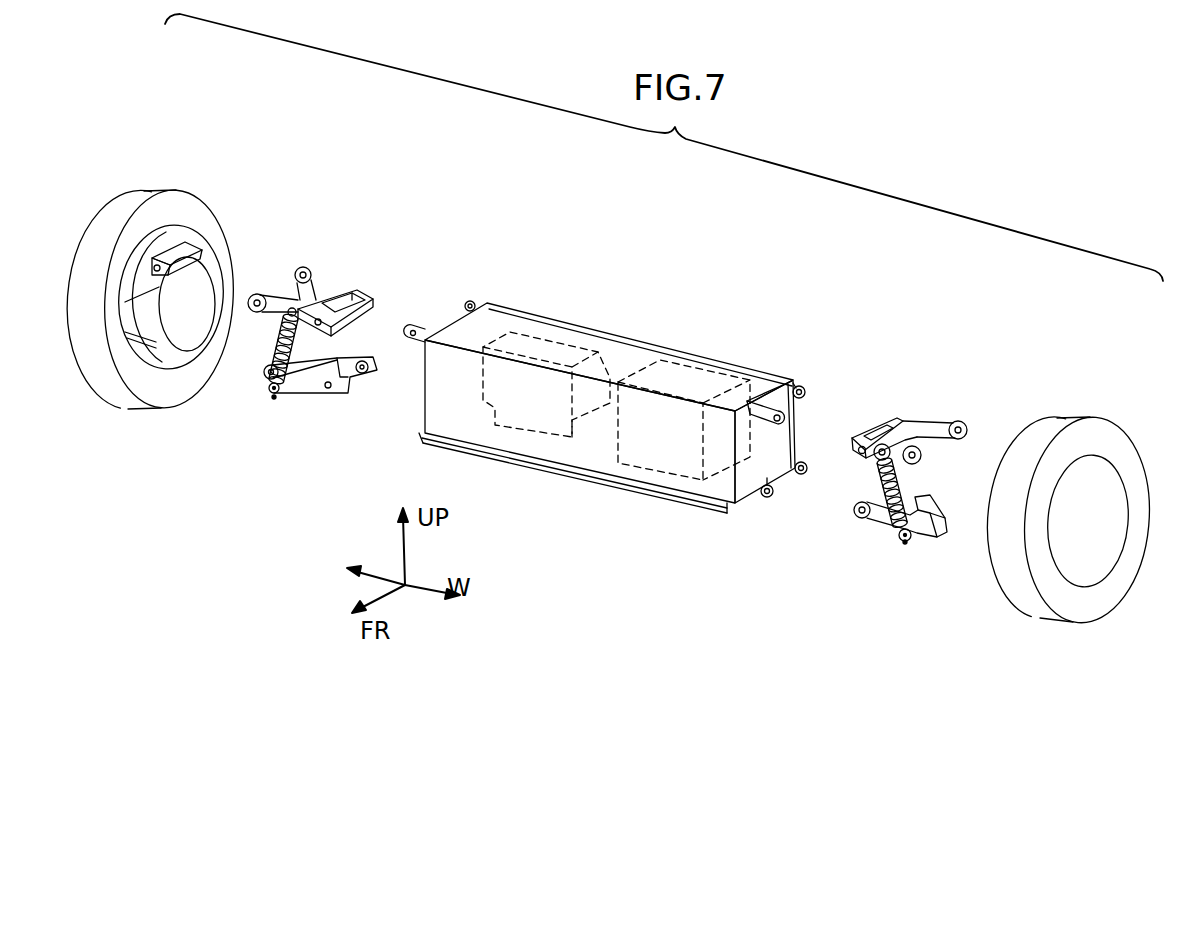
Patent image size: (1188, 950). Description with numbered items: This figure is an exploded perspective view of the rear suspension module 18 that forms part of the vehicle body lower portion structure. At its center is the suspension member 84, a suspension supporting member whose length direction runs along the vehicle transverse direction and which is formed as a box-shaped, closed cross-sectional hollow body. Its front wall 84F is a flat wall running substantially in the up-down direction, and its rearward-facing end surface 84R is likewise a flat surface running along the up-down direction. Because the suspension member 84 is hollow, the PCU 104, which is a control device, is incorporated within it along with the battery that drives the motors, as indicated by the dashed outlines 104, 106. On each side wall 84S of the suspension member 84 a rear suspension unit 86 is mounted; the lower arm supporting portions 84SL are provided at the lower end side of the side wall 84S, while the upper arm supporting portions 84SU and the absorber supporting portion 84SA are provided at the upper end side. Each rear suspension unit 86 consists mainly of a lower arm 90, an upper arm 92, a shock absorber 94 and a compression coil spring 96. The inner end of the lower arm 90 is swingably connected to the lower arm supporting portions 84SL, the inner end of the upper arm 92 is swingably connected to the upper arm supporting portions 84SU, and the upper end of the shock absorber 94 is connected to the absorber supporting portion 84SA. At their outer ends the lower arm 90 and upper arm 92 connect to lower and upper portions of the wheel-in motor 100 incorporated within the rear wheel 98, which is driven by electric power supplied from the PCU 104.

The rear suspension module 18 is at (829, 282).
The suspension member 84 is at (600, 455).
The front wall 84F is at (463, 368).
The end surface 84R is at (633, 340).
The side wall 84S is at (724, 508).
The upper arm supporting portion 84SU is at (433, 333).
The absorber supporting portion 84SA is at (417, 345).
The lower arm supporting portion 84SL is at (800, 480).
The rear suspension unit 86 is at (381, 284).
The lower arm 90 is at (313, 387).
The upper arm 92 is at (325, 287).
The shock absorber 94 is at (275, 397).
The compression coil spring 96 is at (273, 355).
The rear wheel 98 is at (203, 227).
The wheel-in motor 100 is at (202, 303).
The PCU (Power Control Unit) 104 is at (703, 378).
The battery module 106 is at (553, 347).